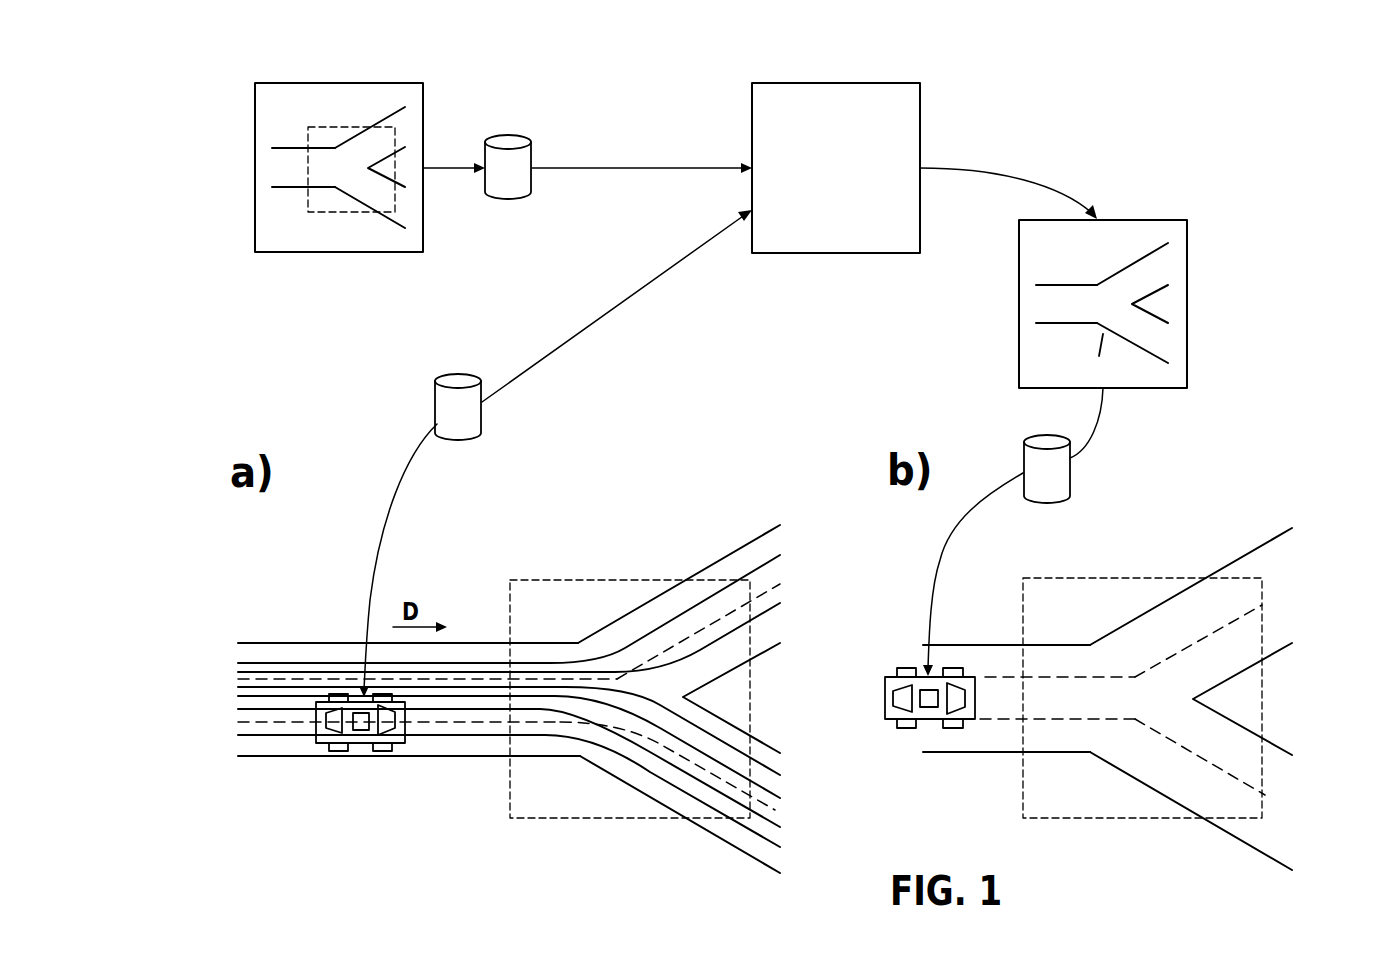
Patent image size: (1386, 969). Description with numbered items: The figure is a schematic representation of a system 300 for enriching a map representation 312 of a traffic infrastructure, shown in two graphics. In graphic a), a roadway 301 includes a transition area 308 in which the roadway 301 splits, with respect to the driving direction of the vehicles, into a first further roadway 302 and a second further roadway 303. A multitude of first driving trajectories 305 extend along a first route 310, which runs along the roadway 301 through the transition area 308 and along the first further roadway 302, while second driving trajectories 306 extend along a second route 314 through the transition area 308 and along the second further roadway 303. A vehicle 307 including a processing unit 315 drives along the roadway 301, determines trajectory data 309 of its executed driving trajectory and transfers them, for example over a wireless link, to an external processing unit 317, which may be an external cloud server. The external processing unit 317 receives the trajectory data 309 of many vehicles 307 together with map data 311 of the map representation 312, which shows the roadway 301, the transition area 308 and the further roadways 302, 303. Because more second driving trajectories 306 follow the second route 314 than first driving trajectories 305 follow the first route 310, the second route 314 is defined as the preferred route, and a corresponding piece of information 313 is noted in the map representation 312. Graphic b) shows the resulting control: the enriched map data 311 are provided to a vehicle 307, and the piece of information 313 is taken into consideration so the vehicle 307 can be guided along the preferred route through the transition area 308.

The system 300 is at (205, 78).
The roadway 301 is at (285, 188).
The first further roadway 302 is at (395, 112).
The second further roadway 303 is at (392, 224).
The first driving trajectories 305 is at (470, 670).
The second driving trajectories 306 is at (475, 740).
The vehicle 307 is at (405, 727).
The transition area 308 is at (306, 138).
The trajectory data 309 is at (484, 418).
The first route 310 is at (770, 588).
The map data 311 is at (506, 135).
The map representation 312 is at (285, 252).
The piece of information 313 is at (1098, 346).
The second route 314 is at (771, 806).
The processing unit 315 is at (362, 732).
The external processing unit 317 is at (858, 185).